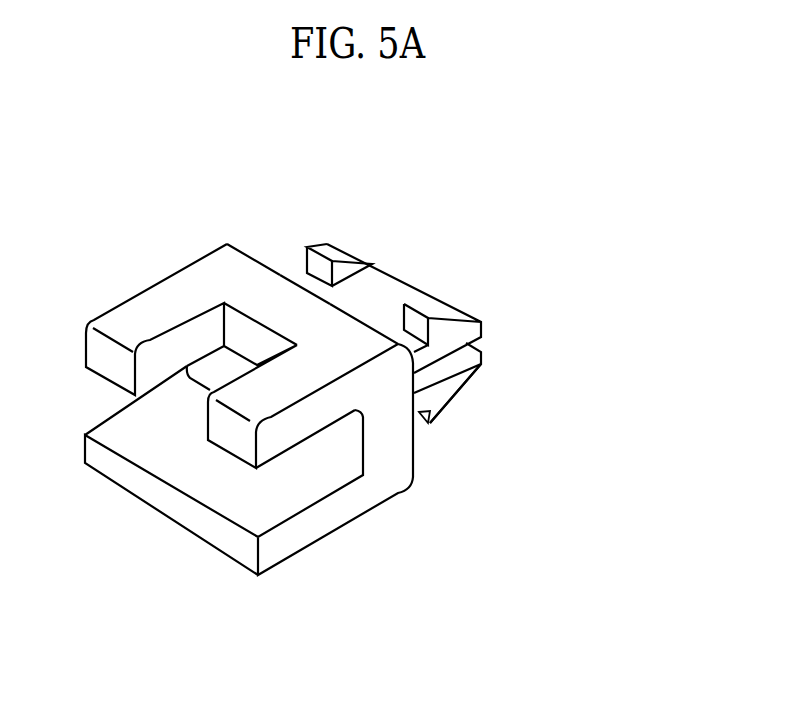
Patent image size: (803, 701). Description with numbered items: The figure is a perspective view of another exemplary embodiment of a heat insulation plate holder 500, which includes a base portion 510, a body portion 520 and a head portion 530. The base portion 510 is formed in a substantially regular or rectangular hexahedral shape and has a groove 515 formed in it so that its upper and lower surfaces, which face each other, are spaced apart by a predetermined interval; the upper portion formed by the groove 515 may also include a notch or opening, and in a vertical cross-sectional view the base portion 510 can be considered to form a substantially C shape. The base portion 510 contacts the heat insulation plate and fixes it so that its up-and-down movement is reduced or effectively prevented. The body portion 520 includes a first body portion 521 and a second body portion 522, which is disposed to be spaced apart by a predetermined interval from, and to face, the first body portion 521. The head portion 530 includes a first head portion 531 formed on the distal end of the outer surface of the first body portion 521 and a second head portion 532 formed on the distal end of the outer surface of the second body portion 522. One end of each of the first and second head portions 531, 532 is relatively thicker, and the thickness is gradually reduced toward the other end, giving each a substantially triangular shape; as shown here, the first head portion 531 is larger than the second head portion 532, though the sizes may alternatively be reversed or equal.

The heat insulation plate holder 500 is at (484, 234).
The base portion 510 is at (283, 545).
The groove 515 is at (186, 454).
The body portion 520 is at (445, 359).
The first body portion 521 is at (307, 283).
The second body portion 522 is at (428, 423).
The head portion 530 is at (481, 399).
The first head portion 531 is at (352, 252).
The second head portion 532 is at (453, 401).